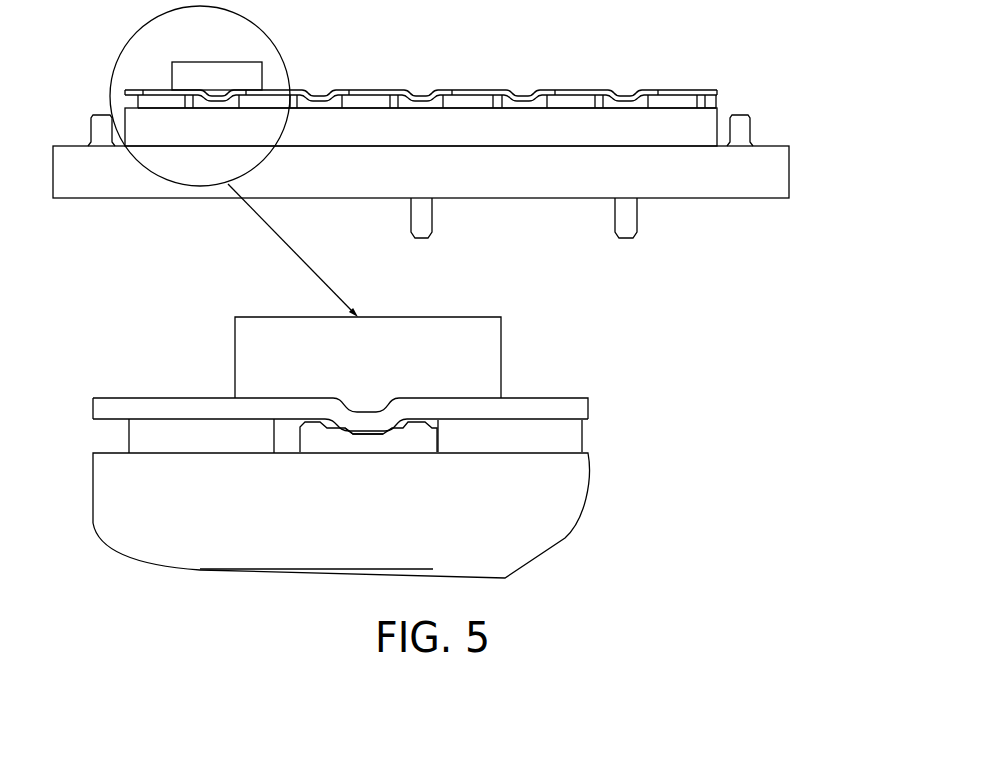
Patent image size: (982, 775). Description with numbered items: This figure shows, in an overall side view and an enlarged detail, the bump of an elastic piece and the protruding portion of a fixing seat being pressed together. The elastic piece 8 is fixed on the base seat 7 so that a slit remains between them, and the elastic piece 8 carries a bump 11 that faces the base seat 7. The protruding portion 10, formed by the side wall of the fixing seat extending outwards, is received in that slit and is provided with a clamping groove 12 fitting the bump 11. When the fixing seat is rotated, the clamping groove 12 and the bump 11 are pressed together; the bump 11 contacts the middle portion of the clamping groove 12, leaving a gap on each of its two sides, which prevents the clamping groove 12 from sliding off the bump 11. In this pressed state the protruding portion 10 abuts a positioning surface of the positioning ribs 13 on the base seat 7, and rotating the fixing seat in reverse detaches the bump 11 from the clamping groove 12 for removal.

The base seat 7 is at (445, 452).
The elastic piece 8 is at (789, 40).
The protruding portion 10 is at (508, 495).
The bump 11 is at (370, 428).
The clamping groove 12 is at (412, 424).
The positioning ribs 13 is at (538, 443).